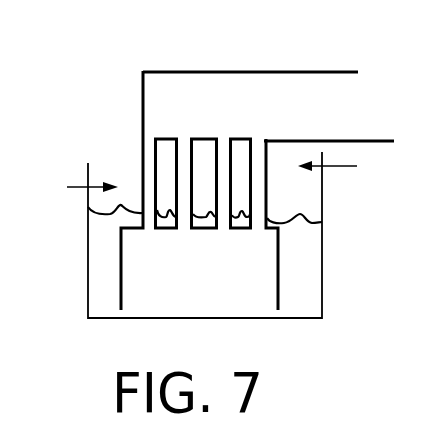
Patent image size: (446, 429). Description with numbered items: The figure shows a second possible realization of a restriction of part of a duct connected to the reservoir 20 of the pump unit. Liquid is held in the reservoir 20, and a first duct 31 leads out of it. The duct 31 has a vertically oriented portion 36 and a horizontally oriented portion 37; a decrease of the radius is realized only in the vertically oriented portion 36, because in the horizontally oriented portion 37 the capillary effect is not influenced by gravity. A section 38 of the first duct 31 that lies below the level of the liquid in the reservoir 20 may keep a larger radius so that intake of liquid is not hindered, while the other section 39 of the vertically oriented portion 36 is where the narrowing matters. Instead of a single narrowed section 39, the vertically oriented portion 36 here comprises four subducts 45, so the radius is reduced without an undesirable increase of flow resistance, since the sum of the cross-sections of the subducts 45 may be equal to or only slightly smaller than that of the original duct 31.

The reservoir 20 is at (98, 262).
The first duct 31 is at (299, 90).
The vertically oriented portion 36 is at (344, 167).
The horizontally oriented portion 37 is at (368, 100).
The section below liquid level 38 is at (264, 281).
The narrowed section 39 is at (77, 187).
The subducts 45 is at (255, 188).